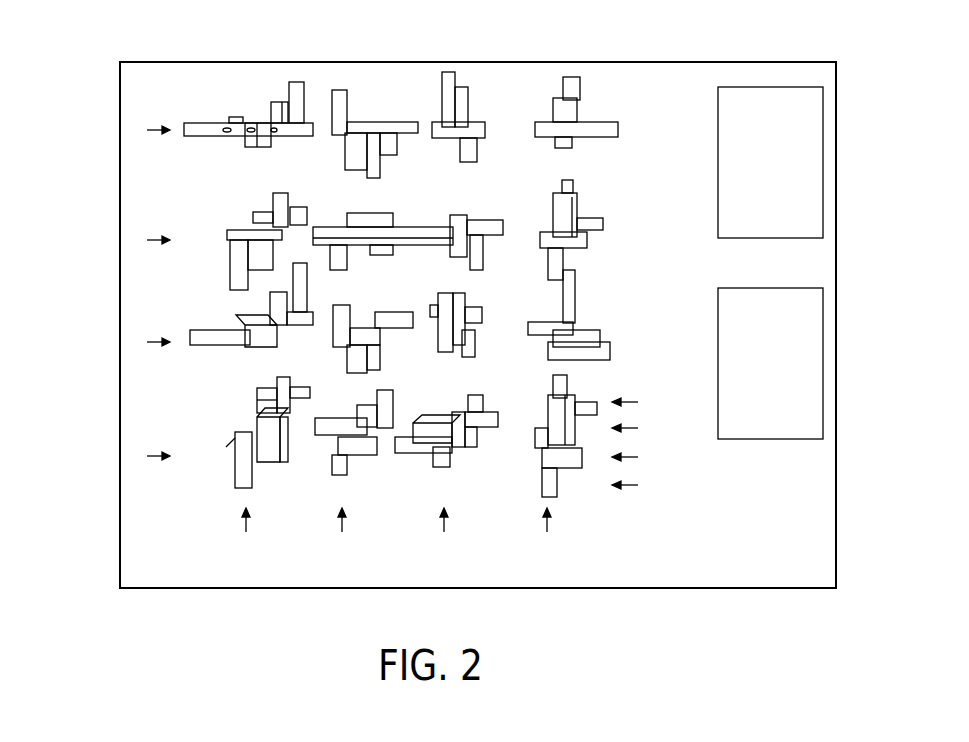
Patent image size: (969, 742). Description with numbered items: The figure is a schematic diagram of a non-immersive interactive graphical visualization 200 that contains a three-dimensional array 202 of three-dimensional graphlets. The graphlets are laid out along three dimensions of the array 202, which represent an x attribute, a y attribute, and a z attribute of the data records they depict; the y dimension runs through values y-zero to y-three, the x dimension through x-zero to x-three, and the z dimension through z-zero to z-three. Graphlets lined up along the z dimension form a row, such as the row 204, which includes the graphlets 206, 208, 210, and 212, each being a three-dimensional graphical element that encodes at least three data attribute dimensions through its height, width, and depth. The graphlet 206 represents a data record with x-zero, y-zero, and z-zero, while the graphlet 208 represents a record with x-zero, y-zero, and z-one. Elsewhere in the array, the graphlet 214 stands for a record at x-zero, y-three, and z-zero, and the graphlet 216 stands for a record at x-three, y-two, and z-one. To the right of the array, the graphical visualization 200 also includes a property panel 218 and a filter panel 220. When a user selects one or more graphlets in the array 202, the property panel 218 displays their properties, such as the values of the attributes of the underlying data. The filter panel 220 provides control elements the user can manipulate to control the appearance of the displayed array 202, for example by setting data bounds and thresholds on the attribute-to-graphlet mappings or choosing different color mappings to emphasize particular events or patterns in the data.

The non-immersive interactive graphical visualization 200 is at (838, 306).
The 3D array 202 is at (110, 500).
The row 204 is at (280, 365).
The graphlet 206 is at (235, 468).
The graphlet 208 is at (266, 463).
The graphlet 210 is at (287, 377).
The graphlet 212 is at (303, 408).
The graphlet 214 is at (208, 122).
The graphlet 216 is at (552, 212).
The property panel 218 is at (718, 172).
The filter panel 220 is at (718, 318).